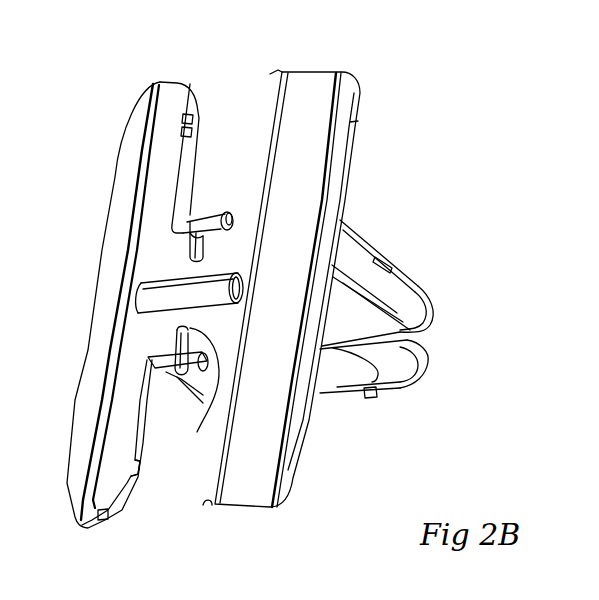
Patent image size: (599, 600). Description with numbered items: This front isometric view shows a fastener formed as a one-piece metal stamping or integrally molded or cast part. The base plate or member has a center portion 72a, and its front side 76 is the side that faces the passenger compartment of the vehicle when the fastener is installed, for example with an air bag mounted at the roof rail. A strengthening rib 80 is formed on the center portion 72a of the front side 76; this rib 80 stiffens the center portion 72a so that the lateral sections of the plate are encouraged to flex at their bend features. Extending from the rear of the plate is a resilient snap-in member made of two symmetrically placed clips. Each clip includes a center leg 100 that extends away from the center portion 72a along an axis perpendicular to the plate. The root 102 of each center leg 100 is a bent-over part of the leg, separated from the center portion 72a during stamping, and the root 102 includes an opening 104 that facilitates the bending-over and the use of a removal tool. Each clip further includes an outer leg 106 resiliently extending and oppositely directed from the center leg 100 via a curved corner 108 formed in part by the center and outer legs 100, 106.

The center portion 72a is at (163, 254).
The front side 76 is at (327, 93).
The strengthening rib 80 is at (145, 294).
The center leg 100 is at (405, 258).
The root 102 is at (197, 106).
The opening 104 is at (207, 207).
The outer leg 106 is at (338, 225).
The curved corner 108 is at (435, 313).